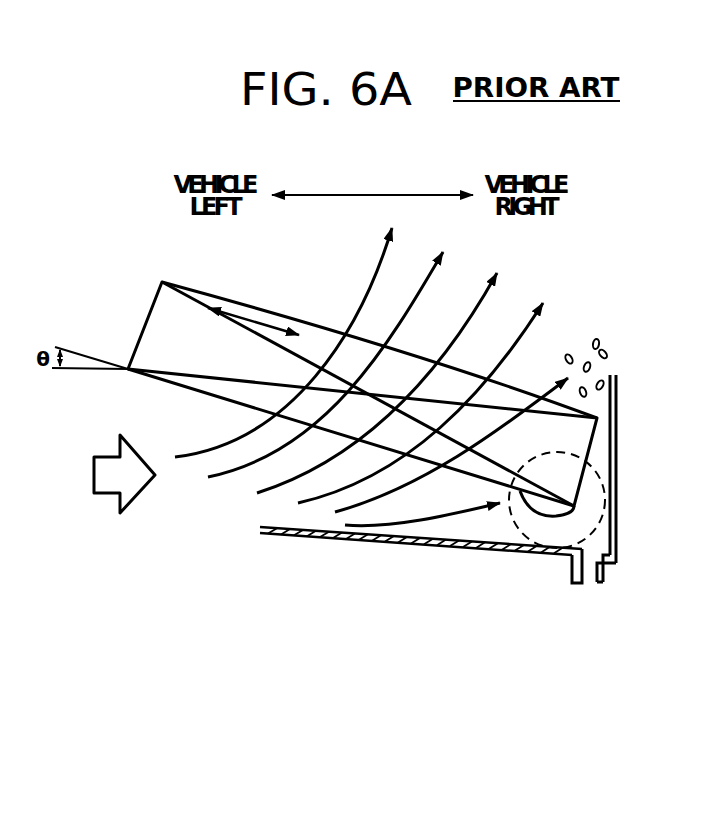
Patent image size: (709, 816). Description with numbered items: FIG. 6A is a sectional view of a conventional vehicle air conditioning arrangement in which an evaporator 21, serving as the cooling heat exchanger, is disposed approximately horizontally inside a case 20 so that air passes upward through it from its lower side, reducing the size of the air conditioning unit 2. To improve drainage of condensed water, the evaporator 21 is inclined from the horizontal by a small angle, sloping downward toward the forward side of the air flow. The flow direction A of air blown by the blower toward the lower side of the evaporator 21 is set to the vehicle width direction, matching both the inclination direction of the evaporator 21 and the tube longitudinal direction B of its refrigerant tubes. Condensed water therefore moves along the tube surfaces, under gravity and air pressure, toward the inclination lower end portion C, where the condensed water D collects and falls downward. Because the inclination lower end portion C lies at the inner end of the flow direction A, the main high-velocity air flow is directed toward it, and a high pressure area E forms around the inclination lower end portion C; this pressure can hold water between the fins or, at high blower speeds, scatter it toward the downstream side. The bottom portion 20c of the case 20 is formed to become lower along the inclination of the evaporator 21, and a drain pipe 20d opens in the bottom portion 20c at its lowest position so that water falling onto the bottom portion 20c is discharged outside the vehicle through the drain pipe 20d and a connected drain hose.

The evaporator 21 is at (146, 311).
The air conditioning unit 2 is at (622, 417).
The case 20 is at (620, 447).
The bottom portion 20c is at (407, 550).
The drain pipe 20d is at (590, 578).
The flow direction of blown air A is at (107, 462).
The tube longitudinal direction B is at (259, 320).
The inclination lower end portion C is at (618, 500).
The condensed water D is at (547, 550).
The high pressure area E is at (619, 459).